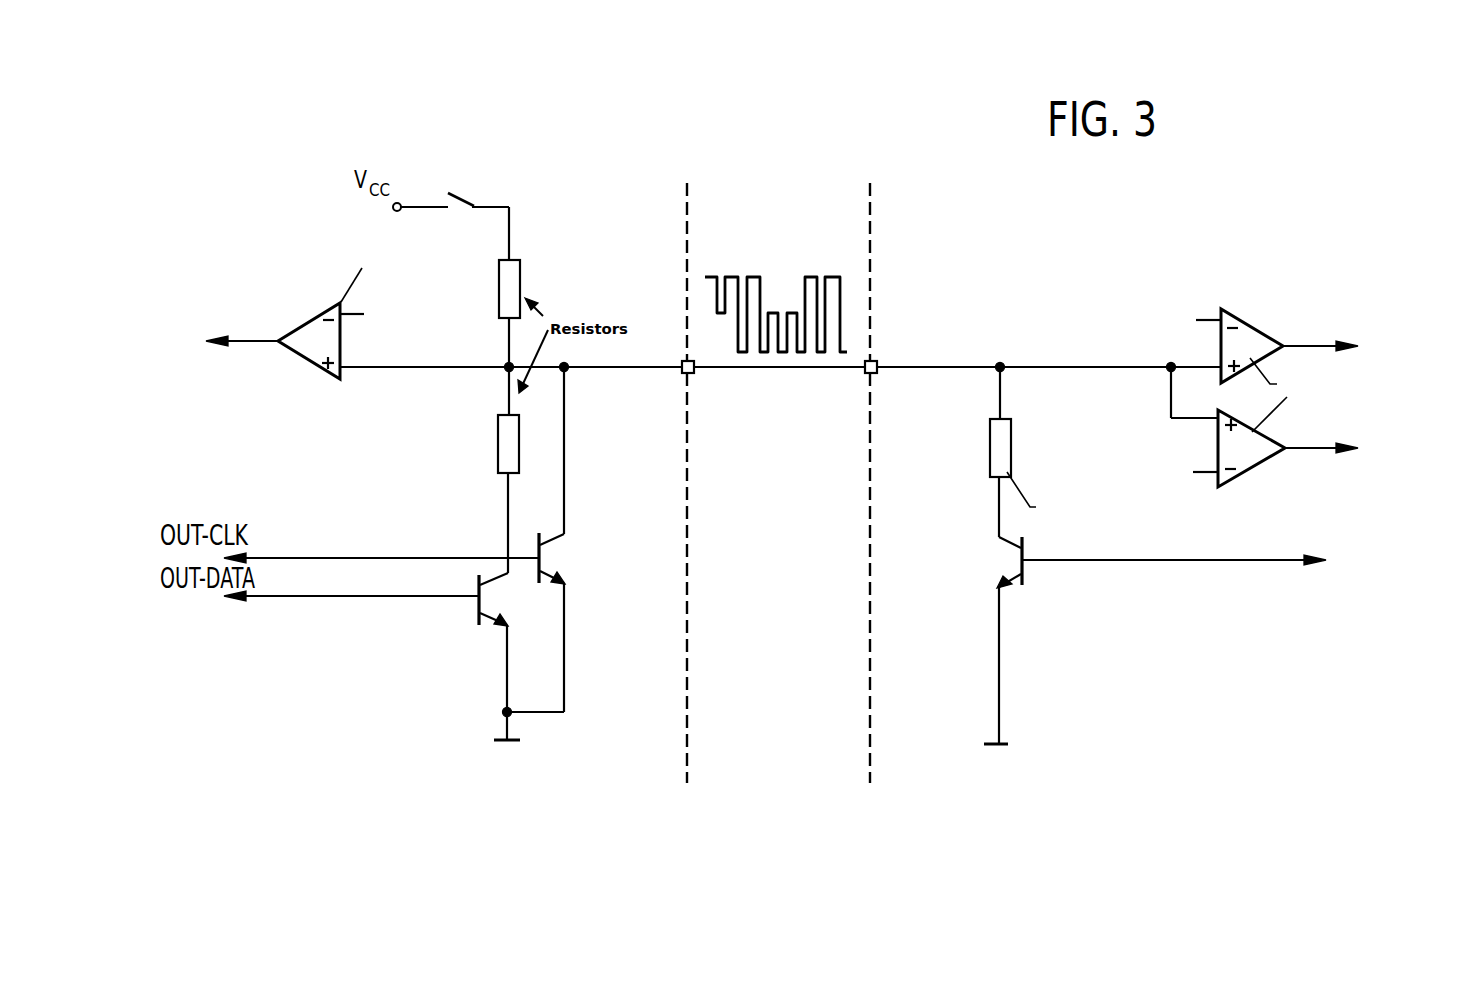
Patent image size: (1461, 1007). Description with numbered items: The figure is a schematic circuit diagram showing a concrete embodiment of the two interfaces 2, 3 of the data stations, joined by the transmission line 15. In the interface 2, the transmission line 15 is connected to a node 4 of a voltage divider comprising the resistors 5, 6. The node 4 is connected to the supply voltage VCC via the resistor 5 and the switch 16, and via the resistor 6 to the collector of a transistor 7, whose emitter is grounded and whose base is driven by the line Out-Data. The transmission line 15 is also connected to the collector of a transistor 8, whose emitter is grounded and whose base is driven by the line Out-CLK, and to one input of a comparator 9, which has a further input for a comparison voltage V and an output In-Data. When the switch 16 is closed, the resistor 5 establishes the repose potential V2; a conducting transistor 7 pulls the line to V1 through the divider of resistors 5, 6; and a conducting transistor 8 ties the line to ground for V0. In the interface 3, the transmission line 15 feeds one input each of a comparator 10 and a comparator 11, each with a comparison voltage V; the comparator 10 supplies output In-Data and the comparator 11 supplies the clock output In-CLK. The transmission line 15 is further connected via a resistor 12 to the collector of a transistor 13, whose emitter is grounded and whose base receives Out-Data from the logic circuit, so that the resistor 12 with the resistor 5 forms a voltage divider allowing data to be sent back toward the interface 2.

The interface 2 is at (380, 786).
The interface 3 is at (1196, 786).
The node 4 is at (508, 365).
The resistor 5 is at (523, 290).
The resistor 6 is at (497, 437).
The transistor 7 is at (478, 610).
The transistor 8 is at (548, 562).
The comparator 9 is at (302, 327).
The comparator 10 is at (1253, 324).
The comparator 11 is at (1264, 460).
The resistor 12 is at (1012, 446).
The transistor 13 is at (1012, 561).
The transmission line 15 is at (789, 371).
The switch 16 is at (466, 198).